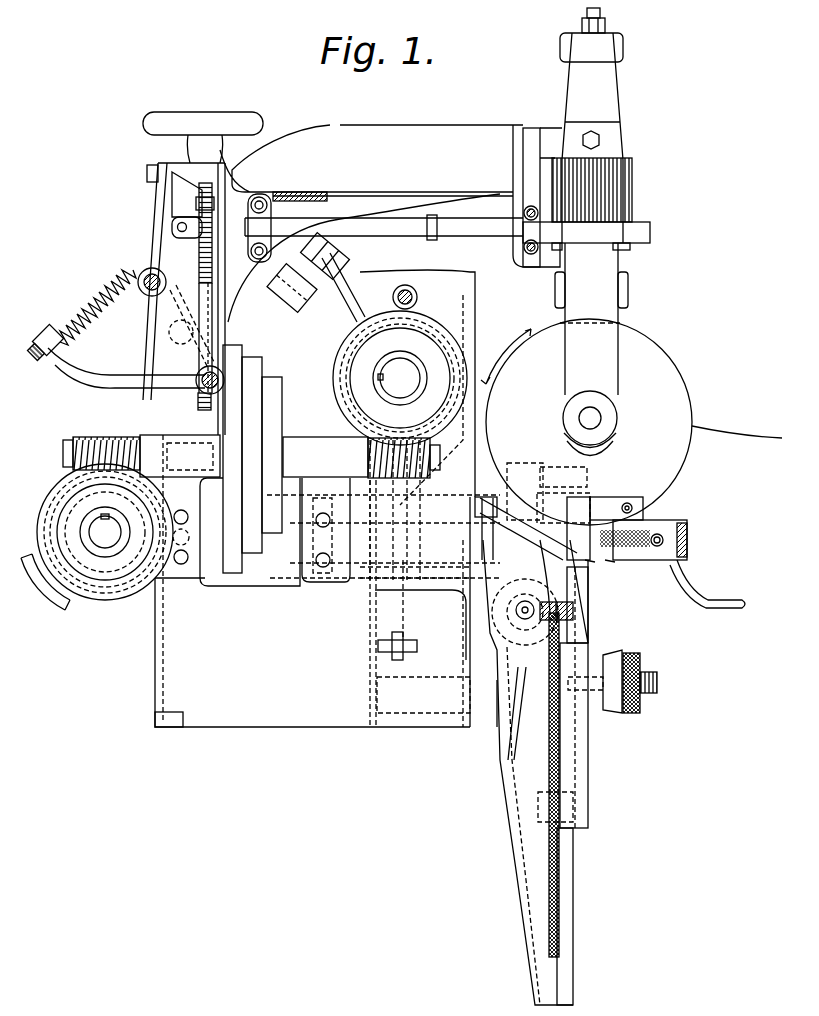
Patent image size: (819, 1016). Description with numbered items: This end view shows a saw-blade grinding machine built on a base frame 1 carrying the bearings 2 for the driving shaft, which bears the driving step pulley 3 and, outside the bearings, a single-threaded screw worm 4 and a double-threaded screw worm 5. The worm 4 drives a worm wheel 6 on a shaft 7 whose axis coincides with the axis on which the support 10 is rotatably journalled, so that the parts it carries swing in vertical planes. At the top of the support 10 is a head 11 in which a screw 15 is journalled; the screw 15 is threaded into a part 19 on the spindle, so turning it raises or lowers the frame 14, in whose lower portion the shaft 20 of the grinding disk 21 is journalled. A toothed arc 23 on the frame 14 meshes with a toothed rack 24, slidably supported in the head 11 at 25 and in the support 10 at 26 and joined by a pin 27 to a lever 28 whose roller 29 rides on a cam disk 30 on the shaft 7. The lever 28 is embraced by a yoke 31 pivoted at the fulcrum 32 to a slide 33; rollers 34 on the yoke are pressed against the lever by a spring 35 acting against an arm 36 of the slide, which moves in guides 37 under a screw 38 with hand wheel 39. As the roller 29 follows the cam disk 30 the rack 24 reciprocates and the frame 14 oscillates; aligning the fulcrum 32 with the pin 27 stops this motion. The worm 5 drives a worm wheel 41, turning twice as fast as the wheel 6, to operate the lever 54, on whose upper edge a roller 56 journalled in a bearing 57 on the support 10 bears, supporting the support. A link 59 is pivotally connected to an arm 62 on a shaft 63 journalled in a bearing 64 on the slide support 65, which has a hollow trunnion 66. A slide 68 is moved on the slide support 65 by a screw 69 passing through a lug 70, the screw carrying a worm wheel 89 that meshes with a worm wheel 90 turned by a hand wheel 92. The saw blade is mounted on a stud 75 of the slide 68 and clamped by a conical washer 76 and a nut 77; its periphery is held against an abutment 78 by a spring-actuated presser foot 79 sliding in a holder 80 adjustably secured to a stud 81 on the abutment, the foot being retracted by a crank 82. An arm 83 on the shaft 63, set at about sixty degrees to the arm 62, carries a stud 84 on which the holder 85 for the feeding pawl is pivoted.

The base frame 1 is at (158, 657).
The bearings 2 is at (177, 437).
The driving step pulley 3 is at (272, 383).
The screw worm 4 is at (84, 436).
The screw worm 5 is at (432, 468).
The worm wheel 6 is at (50, 493).
The shaft 7 is at (107, 542).
The support 10 is at (306, 137).
The head 11 is at (545, 127).
The frame 14 is at (612, 96).
The screw 15 is at (586, 12).
The part 19 is at (604, 31).
The shaft 20 is at (598, 416).
The grinding disk 21 is at (672, 378).
The toothed arc 23 is at (633, 180).
The toothed rack 24 is at (638, 231).
The rack support 25 is at (477, 216).
The rack support 26 is at (263, 227).
The pin 27 is at (178, 226).
The lever 28 is at (180, 247).
The roller 29 is at (192, 556).
The cam disk 30 is at (44, 591).
The yoke 31 is at (157, 298).
The fulcrum 32 is at (170, 325).
The slide 33 is at (212, 296).
The rollers 34 is at (140, 273).
The spring 35 is at (100, 287).
The arm 36 is at (56, 326).
The guides 37 is at (198, 203).
The screw 38 is at (197, 187).
The hand wheel 39 is at (166, 118).
The worm wheel 41 is at (457, 345).
The lever 54 is at (398, 280).
The roller 56 is at (337, 293).
The bearing 57 is at (337, 253).
The link 59 is at (410, 596).
The arm 62 is at (378, 657).
The shaft 63 is at (393, 708).
The bearing 64 is at (487, 714).
The slide support 65 is at (505, 768).
The hollow trunnion 66 is at (453, 580).
The slide 68 is at (586, 760).
The screw 69 is at (560, 888).
The lug 70 is at (540, 804).
The stud 75 is at (658, 685).
The conical washer 76 is at (614, 652).
The nut 77 is at (634, 653).
The abutment 78 is at (590, 562).
The presser foot 79 is at (610, 562).
The holder 80 is at (670, 523).
The stud 81 is at (598, 500).
The crank 82 is at (700, 591).
The arm 83 is at (500, 538).
The stud 84 is at (543, 467).
The holder 85 is at (552, 467).
The worm wheel 89 is at (544, 627).
The worm wheel 90 is at (515, 618).
The hand wheel 92 is at (527, 667).